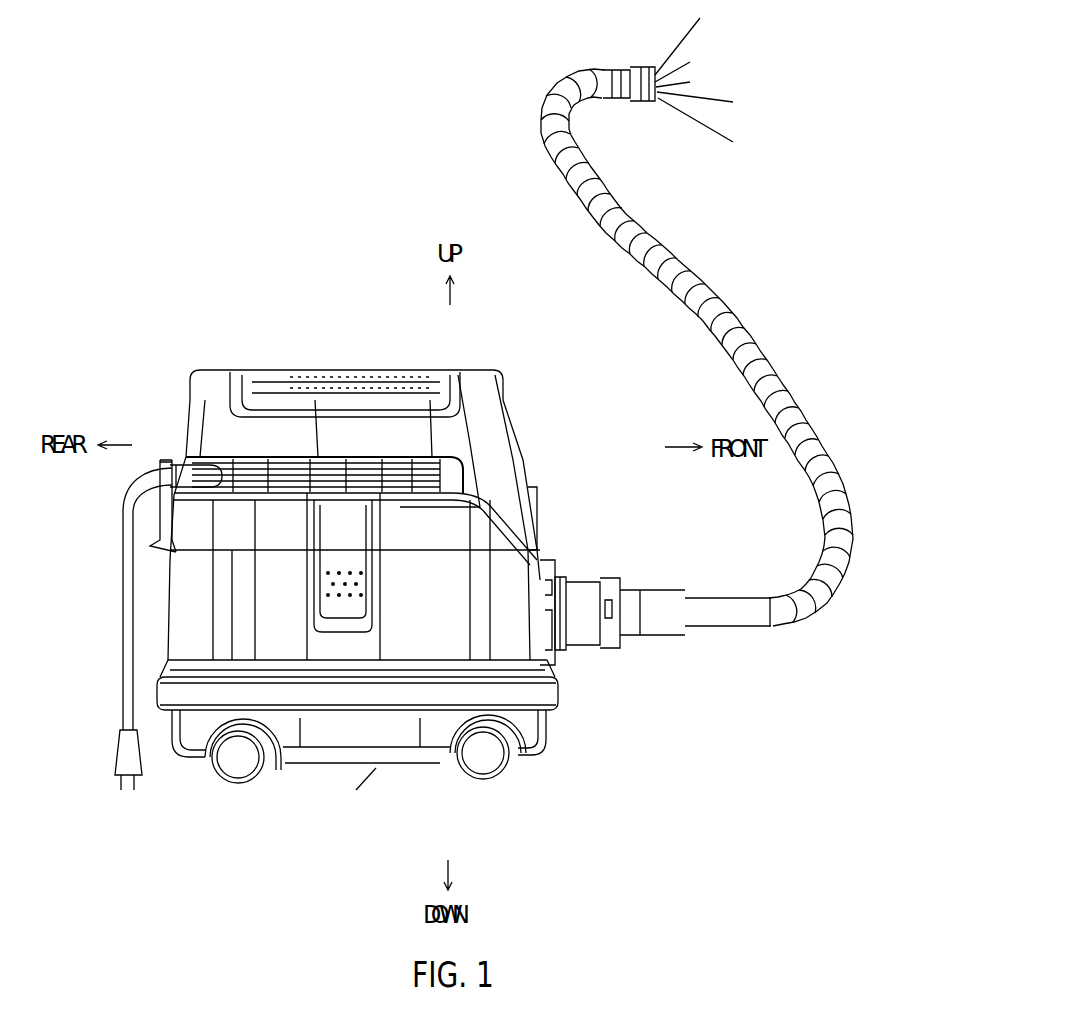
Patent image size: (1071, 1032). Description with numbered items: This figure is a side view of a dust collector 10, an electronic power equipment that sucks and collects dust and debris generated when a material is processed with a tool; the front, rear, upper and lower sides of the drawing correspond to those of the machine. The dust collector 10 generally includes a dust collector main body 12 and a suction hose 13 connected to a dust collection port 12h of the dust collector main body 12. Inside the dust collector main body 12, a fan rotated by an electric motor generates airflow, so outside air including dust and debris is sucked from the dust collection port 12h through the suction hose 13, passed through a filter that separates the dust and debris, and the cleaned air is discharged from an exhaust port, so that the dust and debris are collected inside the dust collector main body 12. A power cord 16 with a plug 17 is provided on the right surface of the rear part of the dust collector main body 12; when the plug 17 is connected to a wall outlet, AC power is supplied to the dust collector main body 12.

The dust collector 10 is at (334, 290).
The dust collector main body 12 is at (221, 388).
The dust collection port 12h is at (572, 628).
The suction hose 13 is at (700, 288).
The power cord 16 is at (122, 652).
The plug 17 is at (118, 758).